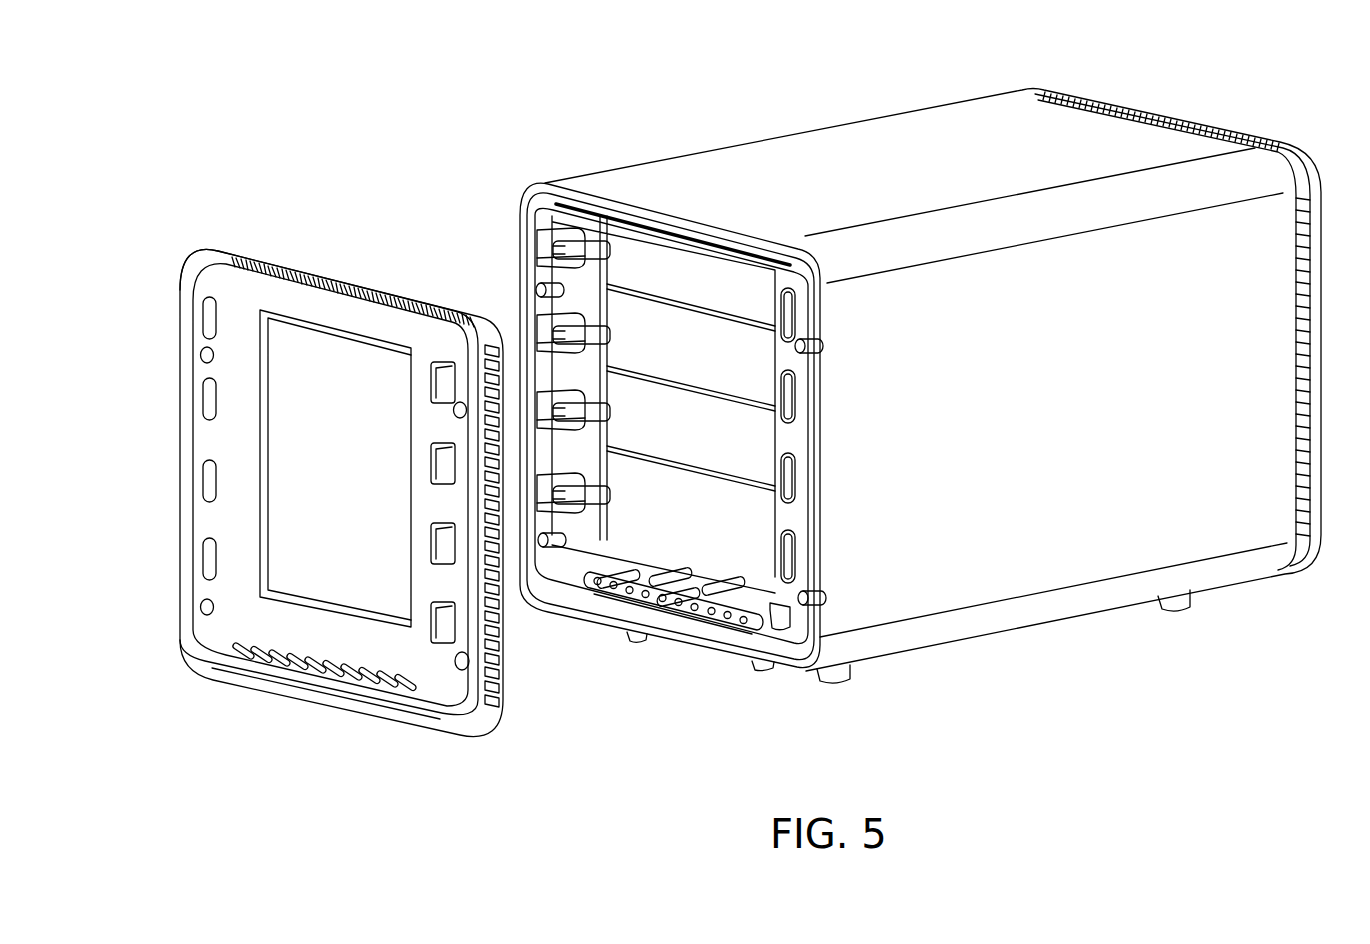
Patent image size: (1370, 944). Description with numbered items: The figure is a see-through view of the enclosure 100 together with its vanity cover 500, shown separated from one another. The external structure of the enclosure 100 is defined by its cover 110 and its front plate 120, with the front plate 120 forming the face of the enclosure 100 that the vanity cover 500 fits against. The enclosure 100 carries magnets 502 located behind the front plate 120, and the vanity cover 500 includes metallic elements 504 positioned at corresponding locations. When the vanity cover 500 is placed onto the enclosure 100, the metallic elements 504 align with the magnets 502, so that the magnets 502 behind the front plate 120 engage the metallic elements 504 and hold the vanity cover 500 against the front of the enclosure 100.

The enclosure 100 is at (933, 372).
The cover 110 is at (838, 126).
The front plate 120 is at (687, 627).
The vanity cover 500 is at (327, 492).
The magnets 502 is at (538, 288).
The metallic elements 504 is at (200, 356).